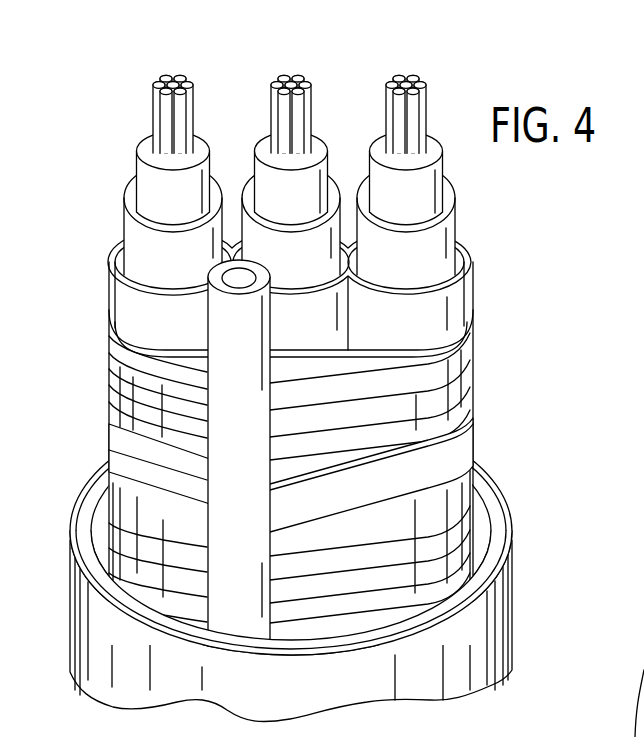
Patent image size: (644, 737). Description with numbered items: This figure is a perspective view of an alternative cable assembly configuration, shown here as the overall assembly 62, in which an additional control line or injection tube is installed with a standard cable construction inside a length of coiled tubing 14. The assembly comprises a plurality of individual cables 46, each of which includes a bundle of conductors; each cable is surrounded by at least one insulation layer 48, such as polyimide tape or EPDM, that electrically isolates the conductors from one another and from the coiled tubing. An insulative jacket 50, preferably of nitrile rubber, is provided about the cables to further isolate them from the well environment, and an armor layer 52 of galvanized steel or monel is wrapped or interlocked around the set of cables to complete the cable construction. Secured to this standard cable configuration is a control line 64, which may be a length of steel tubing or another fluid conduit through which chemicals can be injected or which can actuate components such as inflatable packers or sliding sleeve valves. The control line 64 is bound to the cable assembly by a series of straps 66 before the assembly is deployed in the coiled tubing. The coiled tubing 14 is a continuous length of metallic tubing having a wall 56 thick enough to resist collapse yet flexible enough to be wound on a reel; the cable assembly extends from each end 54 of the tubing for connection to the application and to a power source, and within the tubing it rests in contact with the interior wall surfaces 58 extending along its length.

The coiled tubing 14 is at (70, 588).
The individual cables 46 is at (386, 70).
The insulation layer 48 is at (150, 182).
The insulative jacket 50 is at (115, 298).
The armor layer 52 is at (110, 371).
The end of the coiled tubing 54 is at (497, 497).
The wall of the coiled tubing 56 is at (88, 468).
The interior wall surfaces 58 is at (95, 520).
The cable jacket 62 is at (93, 291).
The control line 64 is at (253, 432).
The straps 66 is at (457, 438).